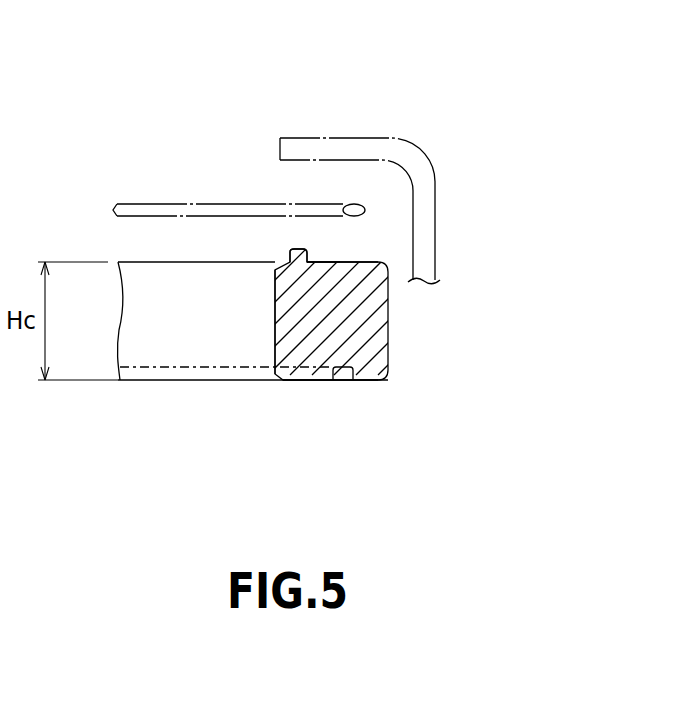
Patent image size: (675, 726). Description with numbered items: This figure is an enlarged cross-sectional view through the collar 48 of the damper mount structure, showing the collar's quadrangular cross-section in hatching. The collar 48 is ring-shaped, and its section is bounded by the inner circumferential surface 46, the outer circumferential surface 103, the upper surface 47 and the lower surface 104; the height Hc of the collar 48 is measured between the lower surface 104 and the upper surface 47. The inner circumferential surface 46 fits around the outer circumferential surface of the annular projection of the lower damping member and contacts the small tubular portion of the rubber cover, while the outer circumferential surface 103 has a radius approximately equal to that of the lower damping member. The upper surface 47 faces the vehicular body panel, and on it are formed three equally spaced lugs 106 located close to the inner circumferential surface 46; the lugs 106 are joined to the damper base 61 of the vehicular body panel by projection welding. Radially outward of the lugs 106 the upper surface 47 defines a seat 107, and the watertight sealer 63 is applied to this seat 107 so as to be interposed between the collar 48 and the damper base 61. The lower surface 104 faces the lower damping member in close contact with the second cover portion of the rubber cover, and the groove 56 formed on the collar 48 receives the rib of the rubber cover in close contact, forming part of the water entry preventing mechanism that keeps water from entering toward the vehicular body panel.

The inner circumferential surface 46 is at (275, 327).
The upper surface 47 is at (332, 260).
The collar 48 is at (118, 298).
The groove 56 is at (338, 381).
The damper base 61 is at (355, 138).
The sealer 63 is at (222, 204).
The outer circumferential surface 103 is at (388, 330).
The lower surface 104 is at (297, 381).
The lugs 106 is at (290, 250).
The seat 107 is at (367, 262).